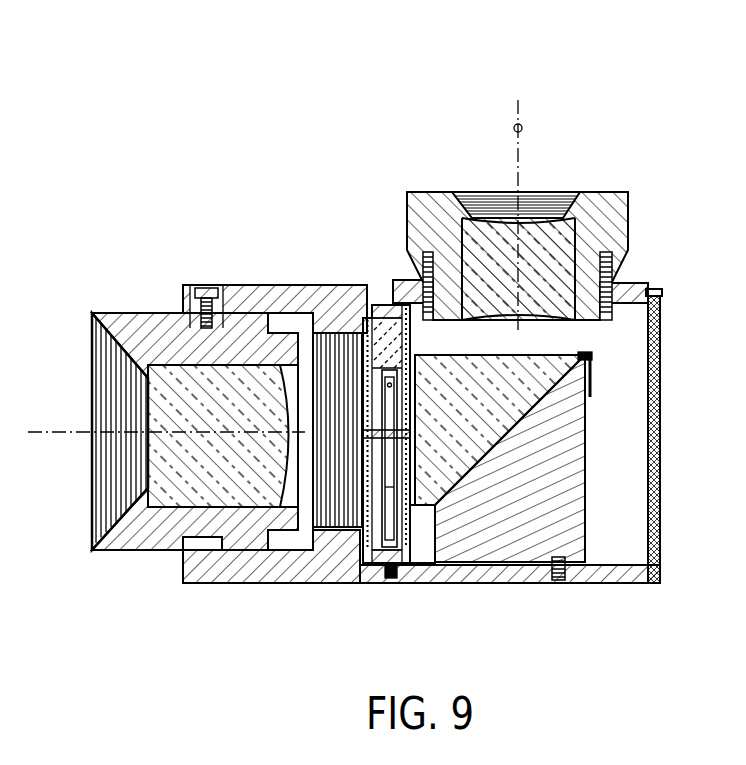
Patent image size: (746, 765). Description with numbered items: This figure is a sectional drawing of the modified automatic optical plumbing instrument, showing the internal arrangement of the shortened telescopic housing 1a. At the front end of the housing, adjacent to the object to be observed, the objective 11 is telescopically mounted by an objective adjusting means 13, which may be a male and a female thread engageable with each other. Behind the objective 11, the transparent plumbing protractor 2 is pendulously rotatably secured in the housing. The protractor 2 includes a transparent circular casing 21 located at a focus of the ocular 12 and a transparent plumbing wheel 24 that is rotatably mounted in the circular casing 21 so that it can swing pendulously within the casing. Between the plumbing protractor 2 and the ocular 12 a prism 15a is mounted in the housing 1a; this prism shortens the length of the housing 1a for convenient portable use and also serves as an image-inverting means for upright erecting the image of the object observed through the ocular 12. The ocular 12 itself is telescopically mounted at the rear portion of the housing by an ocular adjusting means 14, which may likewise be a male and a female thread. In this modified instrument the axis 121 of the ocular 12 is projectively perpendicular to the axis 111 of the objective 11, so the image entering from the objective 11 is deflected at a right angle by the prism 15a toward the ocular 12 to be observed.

The telescopic housing 1a is at (423, 586).
The transparent plumbing protractor 2 is at (390, 322).
The objective 11 is at (178, 485).
The ocular 12 is at (582, 233).
The objective adjusting means 13 is at (223, 587).
The ocular adjusting means 14 is at (627, 263).
The prism 15a is at (543, 368).
The transparent circular casing 21 is at (408, 533).
The transparent plumbing wheel 24 is at (390, 473).
The axis of the objective 111 is at (75, 431).
The axis of the ocular 121 is at (522, 125).